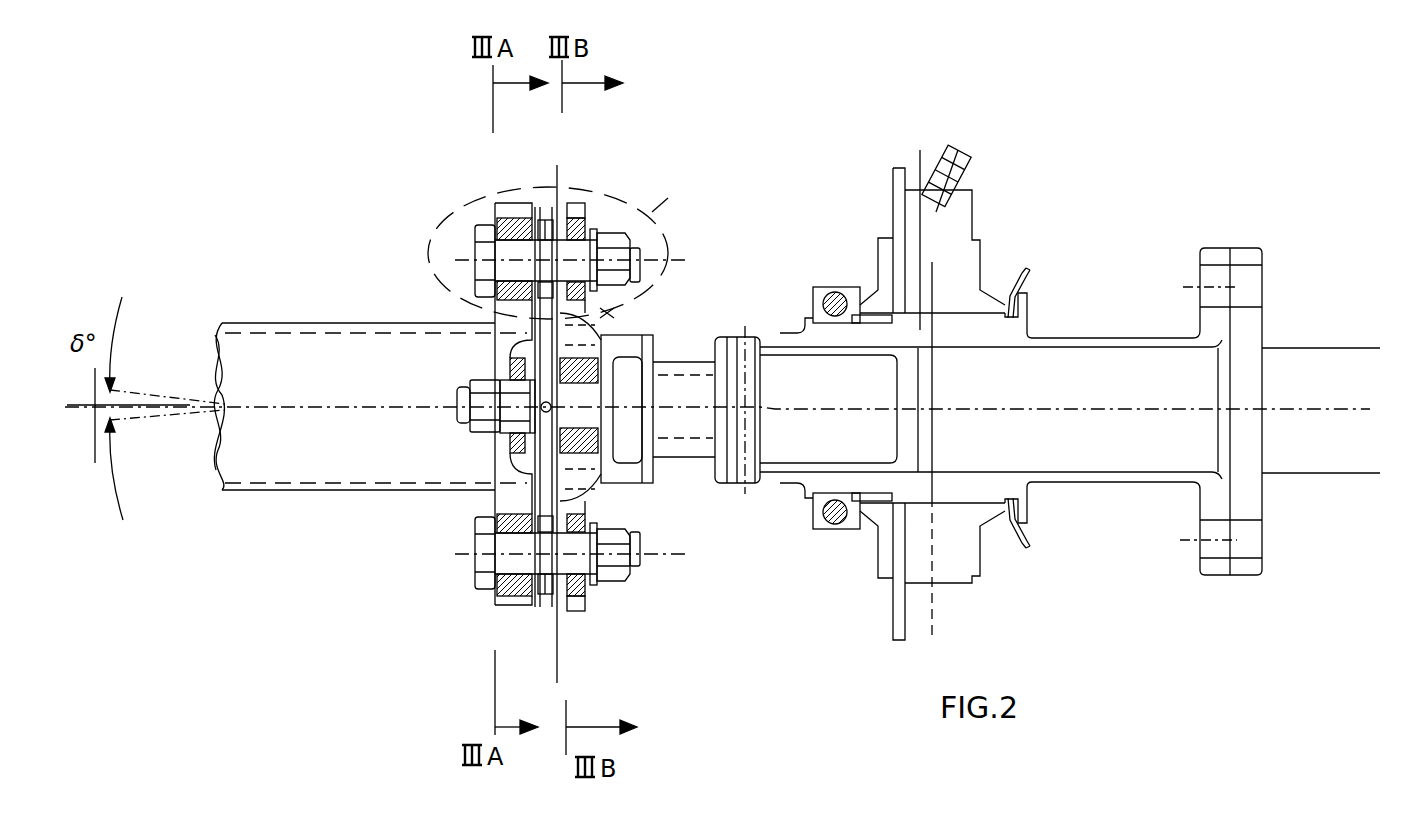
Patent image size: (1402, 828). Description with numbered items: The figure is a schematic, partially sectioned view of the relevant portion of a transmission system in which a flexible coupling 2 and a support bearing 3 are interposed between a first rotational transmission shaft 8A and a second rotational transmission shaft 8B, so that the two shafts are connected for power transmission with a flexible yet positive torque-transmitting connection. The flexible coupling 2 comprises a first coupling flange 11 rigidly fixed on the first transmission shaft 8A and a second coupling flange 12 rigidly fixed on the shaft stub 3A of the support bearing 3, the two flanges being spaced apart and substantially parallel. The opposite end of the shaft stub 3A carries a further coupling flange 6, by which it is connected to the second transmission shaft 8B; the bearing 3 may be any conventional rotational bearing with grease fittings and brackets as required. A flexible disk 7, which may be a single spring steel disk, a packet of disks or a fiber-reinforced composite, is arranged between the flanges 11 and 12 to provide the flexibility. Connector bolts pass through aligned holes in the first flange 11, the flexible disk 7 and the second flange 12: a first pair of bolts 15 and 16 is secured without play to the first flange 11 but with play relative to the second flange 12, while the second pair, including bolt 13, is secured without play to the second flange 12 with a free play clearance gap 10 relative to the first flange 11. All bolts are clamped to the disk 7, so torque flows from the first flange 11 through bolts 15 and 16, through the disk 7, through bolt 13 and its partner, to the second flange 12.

The flexible coupling 2 is at (378, 238).
The support bearing 3 is at (893, 170).
The shaft stub 3A is at (695, 353).
The further coupling flange 6 is at (1220, 276).
The flexible disk 7 is at (538, 494).
The first rotational transmission shaft 8A is at (332, 468).
The second rotational transmission shaft 8B is at (1302, 477).
The free play clearance gap 10 is at (499, 438).
The first coupling flange 11 is at (502, 598).
The second coupling flange 12 is at (580, 606).
The connector bolt 13 is at (636, 463).
The connector bolt 15 is at (572, 253).
The connector bolt 16 is at (600, 590).